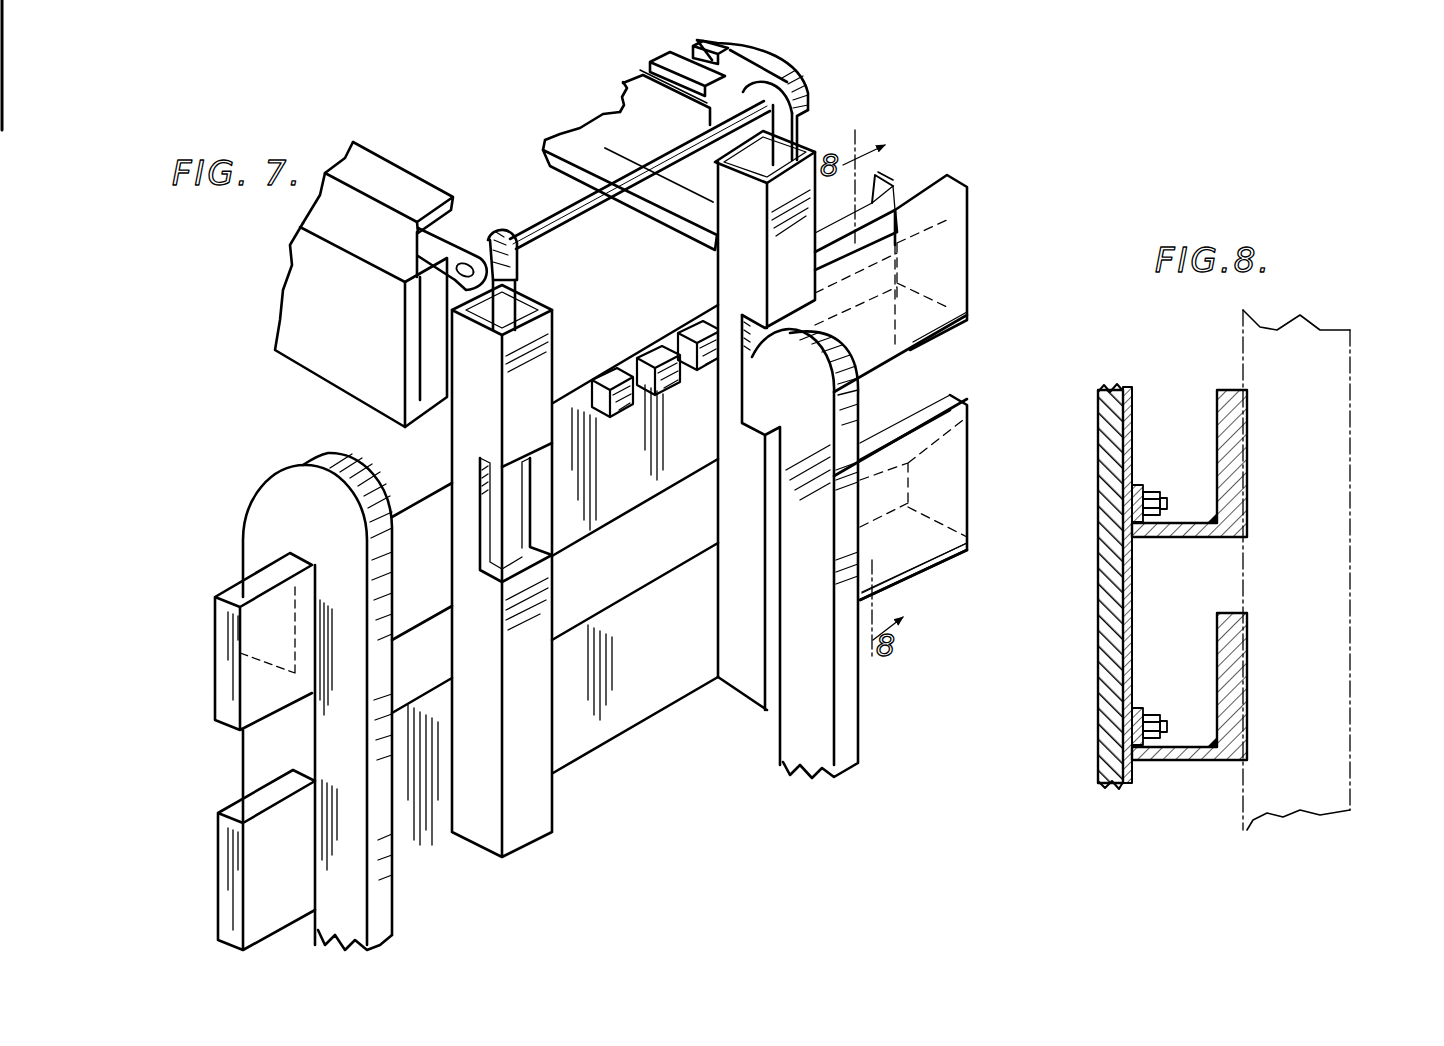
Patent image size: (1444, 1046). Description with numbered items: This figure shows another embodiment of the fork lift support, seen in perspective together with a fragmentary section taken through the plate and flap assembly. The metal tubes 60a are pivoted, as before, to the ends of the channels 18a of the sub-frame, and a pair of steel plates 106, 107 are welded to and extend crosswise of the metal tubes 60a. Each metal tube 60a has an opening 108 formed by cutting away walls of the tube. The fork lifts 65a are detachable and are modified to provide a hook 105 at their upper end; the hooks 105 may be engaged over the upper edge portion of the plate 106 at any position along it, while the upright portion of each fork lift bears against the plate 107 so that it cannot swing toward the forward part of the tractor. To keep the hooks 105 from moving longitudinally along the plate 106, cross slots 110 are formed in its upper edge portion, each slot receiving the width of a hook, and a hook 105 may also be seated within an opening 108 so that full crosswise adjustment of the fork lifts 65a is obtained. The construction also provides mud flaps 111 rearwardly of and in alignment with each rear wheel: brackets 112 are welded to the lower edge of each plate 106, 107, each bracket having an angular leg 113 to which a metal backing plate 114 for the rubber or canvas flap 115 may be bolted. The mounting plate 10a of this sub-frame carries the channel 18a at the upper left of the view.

In FIG. 7, the mounting plate 10a is at (298, 355).
In FIG. 7, the channels 18a is at (405, 185).
In FIG. 7, the metal tubes 60a is at (737, 497).
In FIG. 8, the metal tubes 60a is at (1330, 537).
In FIG. 7, the fork lifts 65a is at (382, 900).
In FIG. 7, the hook 105 is at (283, 492).
In FIG. 7, the steel plate 106 is at (950, 240).
In FIG. 8, the steel plate 106 is at (1233, 460).
In FIG. 7, the steel plate 107 is at (952, 458).
In FIG. 8, the steel plate 107 is at (1238, 635).
In FIG. 7, the opening 108 is at (528, 513).
In FIG. 7, the cross slots 110 is at (673, 342).
In FIG. 7, the mud flaps 111 is at (885, 175).
In FIG. 8, the mud flaps 111 is at (1097, 770).
In FIG. 7, the brackets 112 is at (968, 300).
In FIG. 8, the brackets 112 is at (1185, 538).
In FIG. 7, the angular leg 113 is at (960, 207).
In FIG. 8, the angular leg 113 is at (1153, 545).
In FIG. 7, the metal backing plate 114 is at (887, 385).
In FIG. 8, the metal backing plate 114 is at (1133, 410).
In FIG. 7, the flap 115 is at (870, 183).
In FIG. 8, the flap 115 is at (1097, 590).